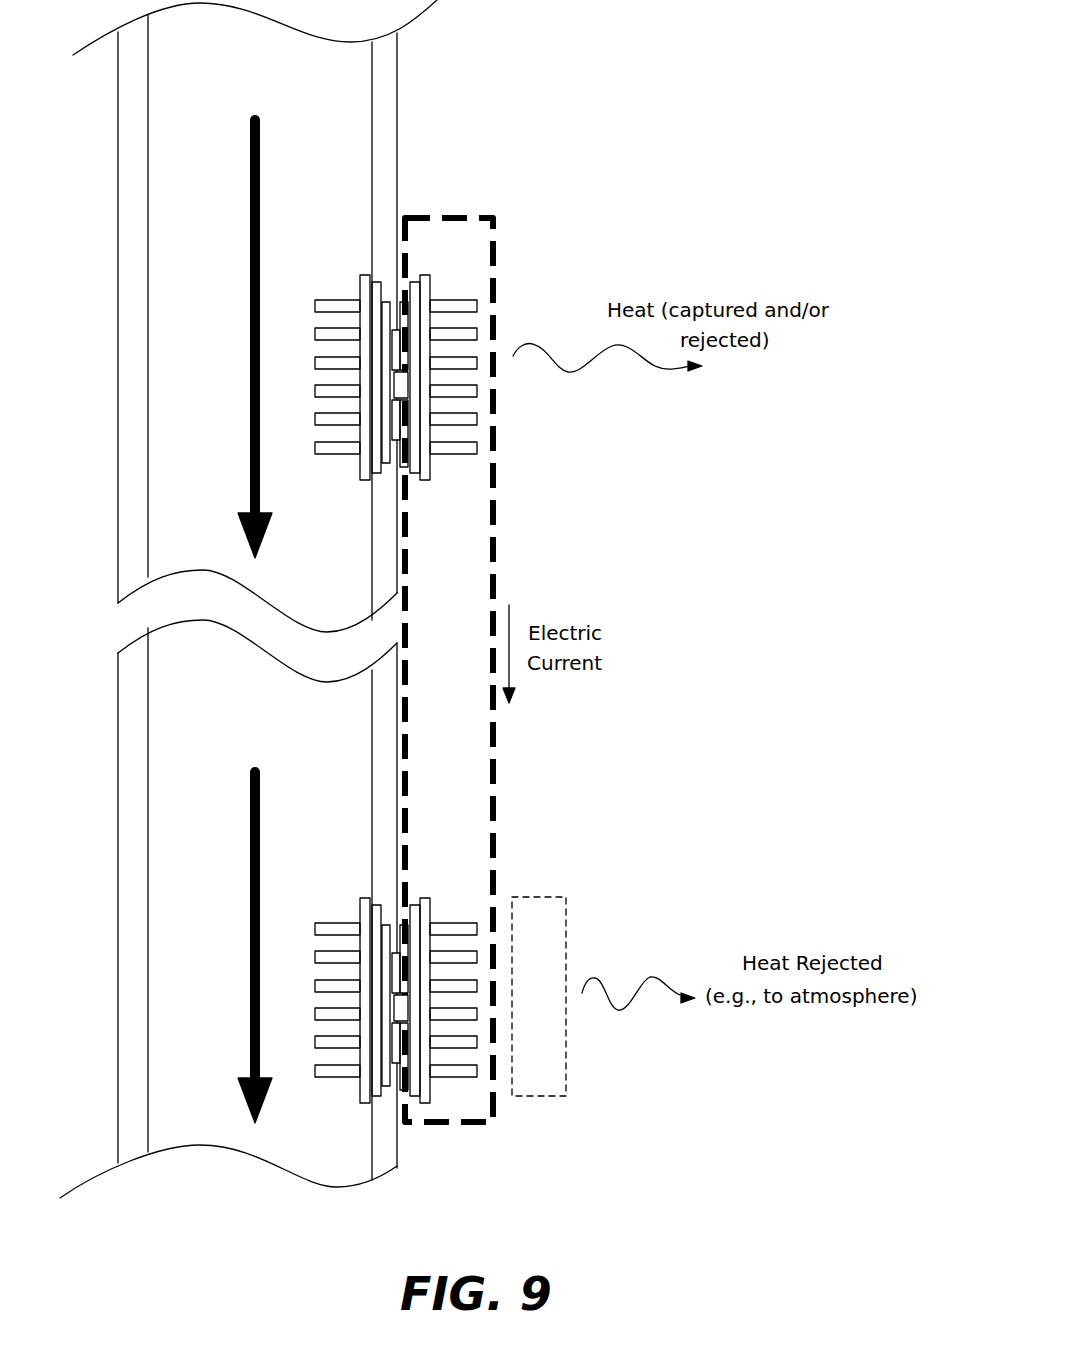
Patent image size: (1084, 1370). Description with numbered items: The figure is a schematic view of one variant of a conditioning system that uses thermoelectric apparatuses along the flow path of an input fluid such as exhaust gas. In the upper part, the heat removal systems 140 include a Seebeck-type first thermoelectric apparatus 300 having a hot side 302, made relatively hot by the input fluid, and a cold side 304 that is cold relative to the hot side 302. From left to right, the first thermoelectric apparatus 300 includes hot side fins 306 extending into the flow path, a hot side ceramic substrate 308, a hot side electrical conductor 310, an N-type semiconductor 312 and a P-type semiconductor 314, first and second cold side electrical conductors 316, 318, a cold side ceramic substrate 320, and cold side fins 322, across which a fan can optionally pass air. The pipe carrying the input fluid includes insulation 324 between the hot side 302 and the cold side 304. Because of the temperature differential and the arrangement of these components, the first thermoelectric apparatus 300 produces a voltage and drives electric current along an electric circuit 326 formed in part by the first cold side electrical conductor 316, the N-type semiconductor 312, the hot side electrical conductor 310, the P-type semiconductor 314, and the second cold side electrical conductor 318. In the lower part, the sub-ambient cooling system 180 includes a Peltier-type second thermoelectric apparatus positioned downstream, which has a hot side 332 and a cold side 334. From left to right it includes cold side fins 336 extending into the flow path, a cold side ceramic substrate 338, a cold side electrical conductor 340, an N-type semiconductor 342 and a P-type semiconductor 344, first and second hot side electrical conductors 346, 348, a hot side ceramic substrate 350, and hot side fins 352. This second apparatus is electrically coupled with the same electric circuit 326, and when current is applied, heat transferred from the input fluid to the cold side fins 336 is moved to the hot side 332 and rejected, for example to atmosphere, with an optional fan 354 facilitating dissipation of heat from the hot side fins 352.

The heat removal systems 140 is at (641, 137).
The sub-ambient cooling system 180 is at (668, 861).
The first thermoelectric apparatus 300 is at (533, 248).
The hot side 302 is at (400, 385).
The cold side 304 is at (431, 240).
The hot side fins 306 is at (315, 420).
The hot side ceramic substrate 308 is at (373, 477).
The hot side electrical conductor 310 is at (385, 465).
The N-type semiconductor 312 is at (396, 442).
The P-type semiconductor 314 is at (392, 330).
The first cold side electrical conductor 316 is at (406, 420).
The second cold side electrical conductor 318 is at (406, 340).
The cold side ceramic substrate 320 is at (410, 475).
The cold side fins 322 is at (479, 388).
The insulation 324 is at (390, 599).
The electric circuit 326 is at (495, 543).
The hot side 332 is at (447, 877).
The cold side 334 is at (403, 1016).
The cold side fins 336 is at (315, 1043).
The cold side ceramic substrate 338 is at (373, 1100).
The cold side electrical conductor 340 is at (385, 1088).
The N-type semiconductor 342 is at (396, 1065).
The P-type semiconductor 344 is at (392, 953).
The first hot side electrical conductor 346 is at (406, 1043).
The second hot side electrical conductor 348 is at (407, 965).
The hot side ceramic substrate 350 is at (425, 1112).
The hot side fins 352 is at (480, 1012).
The fan 354 is at (537, 1097).